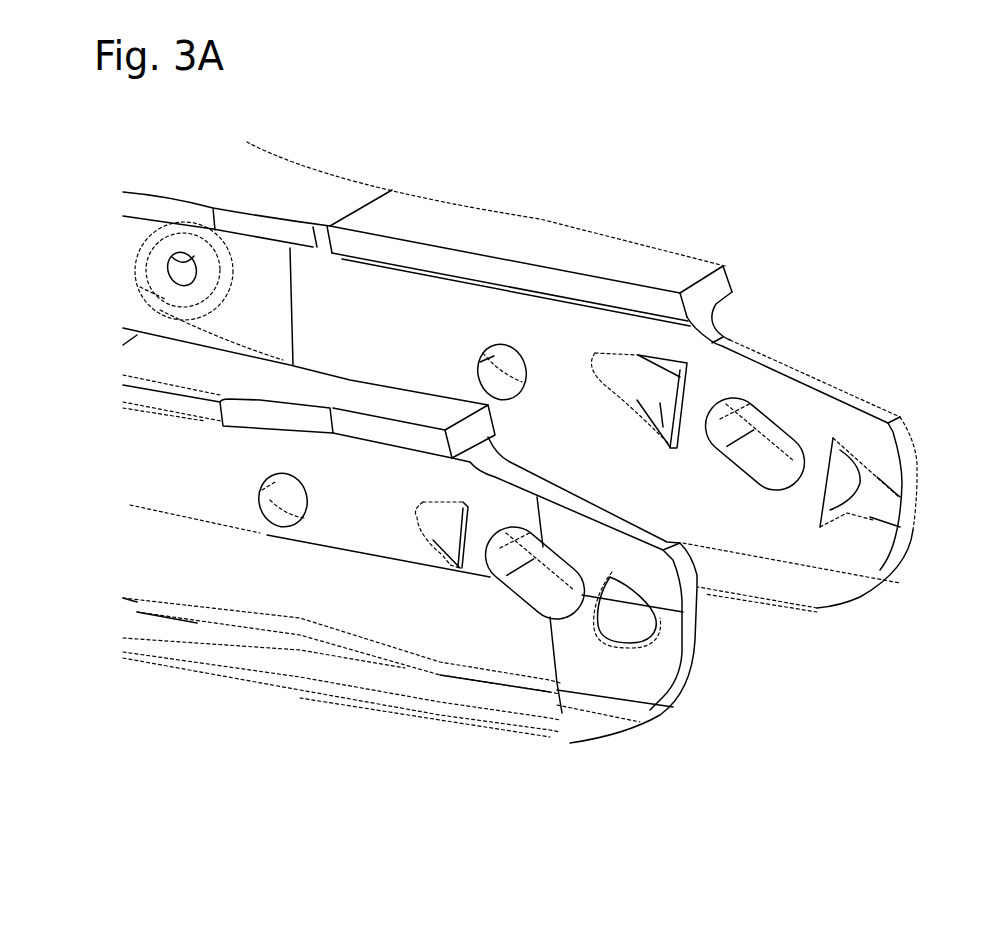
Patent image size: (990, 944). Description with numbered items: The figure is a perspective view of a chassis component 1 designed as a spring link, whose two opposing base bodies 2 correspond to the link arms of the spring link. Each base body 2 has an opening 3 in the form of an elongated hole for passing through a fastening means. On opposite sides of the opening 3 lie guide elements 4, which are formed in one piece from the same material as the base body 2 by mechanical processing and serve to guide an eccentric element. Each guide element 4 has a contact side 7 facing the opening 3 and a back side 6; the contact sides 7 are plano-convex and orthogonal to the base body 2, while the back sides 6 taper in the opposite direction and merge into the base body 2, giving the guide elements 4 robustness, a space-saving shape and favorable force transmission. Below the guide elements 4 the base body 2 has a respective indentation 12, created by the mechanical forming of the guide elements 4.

The chassis component 1 is at (690, 186).
The base body 2 is at (813, 410).
The opening 3 is at (760, 440).
The guide element 4 is at (617, 660).
The back side 6 is at (435, 523).
The contact side 7 is at (447, 552).
The indentation 12 is at (870, 497).